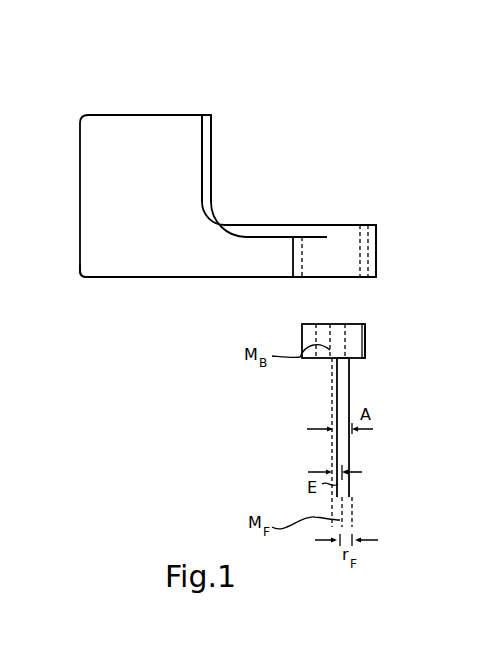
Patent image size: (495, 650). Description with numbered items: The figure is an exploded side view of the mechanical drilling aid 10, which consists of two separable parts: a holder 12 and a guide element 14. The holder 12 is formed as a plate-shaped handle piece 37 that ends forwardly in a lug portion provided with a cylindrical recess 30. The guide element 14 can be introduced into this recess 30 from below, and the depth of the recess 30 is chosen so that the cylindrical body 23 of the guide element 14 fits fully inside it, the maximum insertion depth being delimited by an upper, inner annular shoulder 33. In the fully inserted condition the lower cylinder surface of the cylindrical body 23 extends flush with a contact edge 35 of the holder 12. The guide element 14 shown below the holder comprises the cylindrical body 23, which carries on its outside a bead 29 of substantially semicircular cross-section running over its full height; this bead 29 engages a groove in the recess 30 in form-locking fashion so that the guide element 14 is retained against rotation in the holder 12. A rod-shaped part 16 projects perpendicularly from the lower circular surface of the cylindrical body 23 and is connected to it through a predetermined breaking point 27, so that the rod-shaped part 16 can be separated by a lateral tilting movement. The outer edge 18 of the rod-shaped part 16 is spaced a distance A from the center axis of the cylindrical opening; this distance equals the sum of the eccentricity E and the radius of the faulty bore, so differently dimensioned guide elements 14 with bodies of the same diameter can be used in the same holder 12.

The mechanical drilling aid 10 is at (148, 335).
The holder 12 is at (211, 150).
The guide element 14 is at (357, 322).
The rod-shaped part 16 is at (348, 394).
The outer edge 18 is at (353, 380).
The cylindrical body 23 is at (302, 340).
The predetermined breaking point 27 is at (352, 358).
The bead 29 is at (368, 340).
The cylindrical recess 30 is at (348, 268).
The annular shoulder 33 is at (303, 231).
The contact edge 35 is at (122, 280).
The handle piece 37 is at (112, 138).